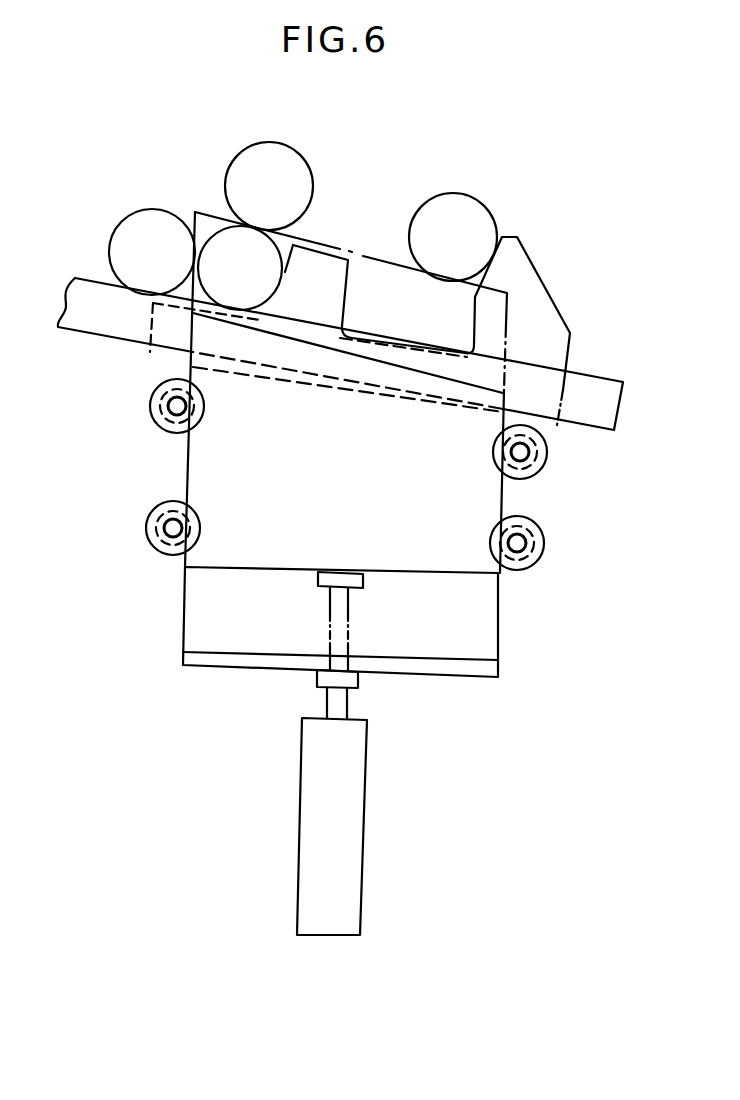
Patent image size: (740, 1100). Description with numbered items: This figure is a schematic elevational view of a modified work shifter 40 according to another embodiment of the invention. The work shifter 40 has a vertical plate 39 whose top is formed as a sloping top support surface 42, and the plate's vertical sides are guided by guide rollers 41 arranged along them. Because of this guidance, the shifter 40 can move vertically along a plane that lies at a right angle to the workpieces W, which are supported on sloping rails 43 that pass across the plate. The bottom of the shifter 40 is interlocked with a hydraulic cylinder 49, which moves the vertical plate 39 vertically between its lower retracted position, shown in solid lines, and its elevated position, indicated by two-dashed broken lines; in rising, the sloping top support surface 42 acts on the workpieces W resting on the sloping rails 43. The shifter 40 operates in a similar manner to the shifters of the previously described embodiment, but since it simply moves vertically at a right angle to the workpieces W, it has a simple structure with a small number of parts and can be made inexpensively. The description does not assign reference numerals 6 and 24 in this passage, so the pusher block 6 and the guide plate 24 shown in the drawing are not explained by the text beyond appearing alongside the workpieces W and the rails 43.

The workpiece W is at (243, 178).
The workpiece pusher block 6 is at (307, 263).
The guide plate 24 is at (506, 274).
The vertical plate 39 is at (350, 460).
The work shifter 40 is at (170, 630).
The guide rollers 41 is at (153, 503).
The sloping top support surface 42 is at (470, 384).
The sloping rails 43 is at (115, 313).
The hydraulic cylinder 49 is at (292, 786).